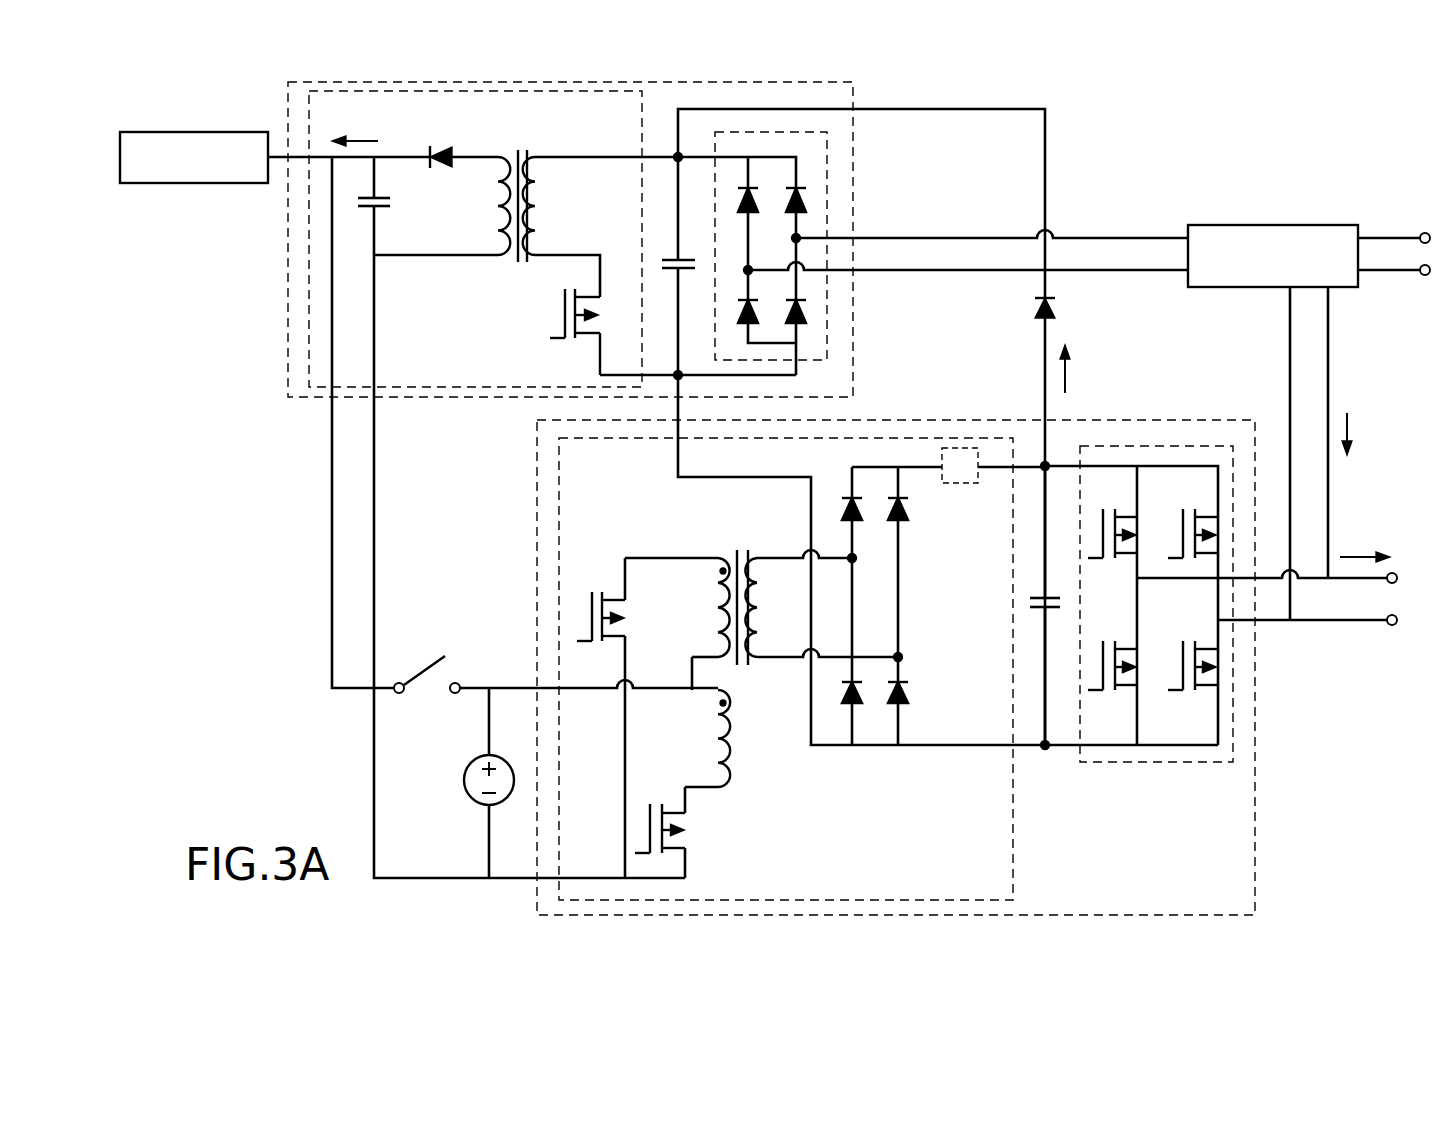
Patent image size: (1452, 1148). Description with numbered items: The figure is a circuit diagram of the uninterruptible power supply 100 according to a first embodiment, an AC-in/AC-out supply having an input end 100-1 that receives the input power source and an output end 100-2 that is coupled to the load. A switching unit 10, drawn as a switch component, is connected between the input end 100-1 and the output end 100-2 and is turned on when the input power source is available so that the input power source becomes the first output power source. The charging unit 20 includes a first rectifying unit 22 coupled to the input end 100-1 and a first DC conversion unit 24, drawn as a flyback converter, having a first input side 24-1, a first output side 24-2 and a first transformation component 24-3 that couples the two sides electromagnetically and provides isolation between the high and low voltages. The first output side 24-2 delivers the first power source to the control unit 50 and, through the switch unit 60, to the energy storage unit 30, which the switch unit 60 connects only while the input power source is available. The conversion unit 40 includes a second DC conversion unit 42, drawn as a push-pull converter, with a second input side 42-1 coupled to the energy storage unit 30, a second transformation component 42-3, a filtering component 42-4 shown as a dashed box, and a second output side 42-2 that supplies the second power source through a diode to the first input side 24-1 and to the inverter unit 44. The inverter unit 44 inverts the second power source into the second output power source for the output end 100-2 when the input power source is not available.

The uninterruptible power supply 100 is at (1190, 118).
The switching unit 10 is at (1282, 233).
The input end 100-1 is at (1395, 236).
The output end 100-2 is at (1330, 326).
The charging unit 20 is at (295, 347).
The first rectifying unit 22 is at (830, 147).
The first DC conversion unit 24 is at (318, 282).
The first input side 24-1 is at (657, 155).
The first output side 24-2 is at (330, 467).
The first transformation component 24-3 is at (523, 153).
The control unit 50 is at (146, 172).
The switch unit 60 is at (450, 665).
The energy storage unit 30 is at (475, 782).
The conversion unit 40 is at (1235, 873).
The second DC conversion unit 42 is at (1000, 840).
The second input side 42-1 is at (575, 690).
The second output side 42-2 is at (1028, 460).
The second transformation component 42-3 is at (730, 548).
The filtering component 42-4 is at (960, 465).
The inverter unit 44 is at (1193, 758).